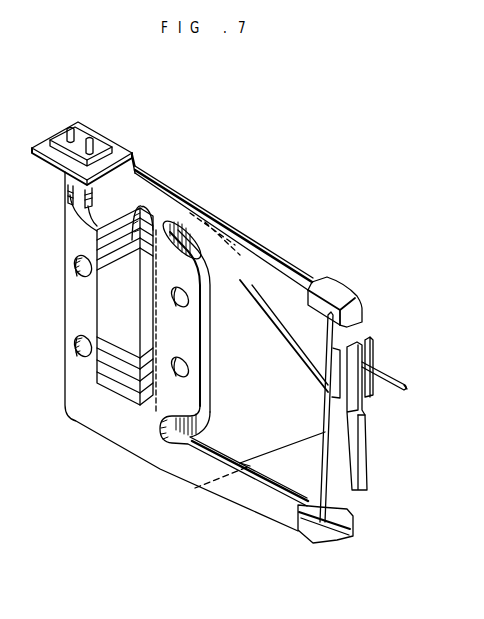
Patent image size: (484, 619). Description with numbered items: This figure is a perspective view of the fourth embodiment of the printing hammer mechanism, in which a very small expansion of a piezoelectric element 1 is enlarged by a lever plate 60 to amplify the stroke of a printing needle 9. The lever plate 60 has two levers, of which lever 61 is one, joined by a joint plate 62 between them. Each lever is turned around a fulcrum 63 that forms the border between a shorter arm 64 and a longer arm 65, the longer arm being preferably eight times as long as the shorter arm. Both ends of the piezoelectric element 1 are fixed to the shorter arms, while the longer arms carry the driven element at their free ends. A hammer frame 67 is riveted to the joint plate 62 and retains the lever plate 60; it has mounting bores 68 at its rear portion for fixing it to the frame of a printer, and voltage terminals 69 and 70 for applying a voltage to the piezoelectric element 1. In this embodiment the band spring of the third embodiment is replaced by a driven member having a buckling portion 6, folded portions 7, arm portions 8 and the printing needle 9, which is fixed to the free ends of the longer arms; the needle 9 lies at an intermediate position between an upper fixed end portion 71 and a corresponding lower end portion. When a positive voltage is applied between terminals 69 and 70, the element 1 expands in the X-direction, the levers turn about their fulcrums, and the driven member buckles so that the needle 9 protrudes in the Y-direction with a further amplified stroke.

The lever plate 60 is at (300, 253).
The voltage terminal 69 is at (70, 137).
The voltage terminal 70 is at (90, 141).
The hammer frame 67 is at (72, 309).
The mounting bores 68 is at (75, 266).
The piezoelectric element 1 is at (118, 337).
The shorter arm 64 is at (147, 197).
The fulcrum 63 is at (170, 213).
The longer arm 65 is at (230, 247).
The lever 61 is at (232, 153).
The joint plate 62 is at (193, 333).
The upper fixed end portion 71 is at (347, 318).
The buckling portion 6 is at (335, 433).
The folded portions 7 is at (373, 362).
The printing needle 9 is at (410, 390).
The arm portions 8 is at (367, 490).